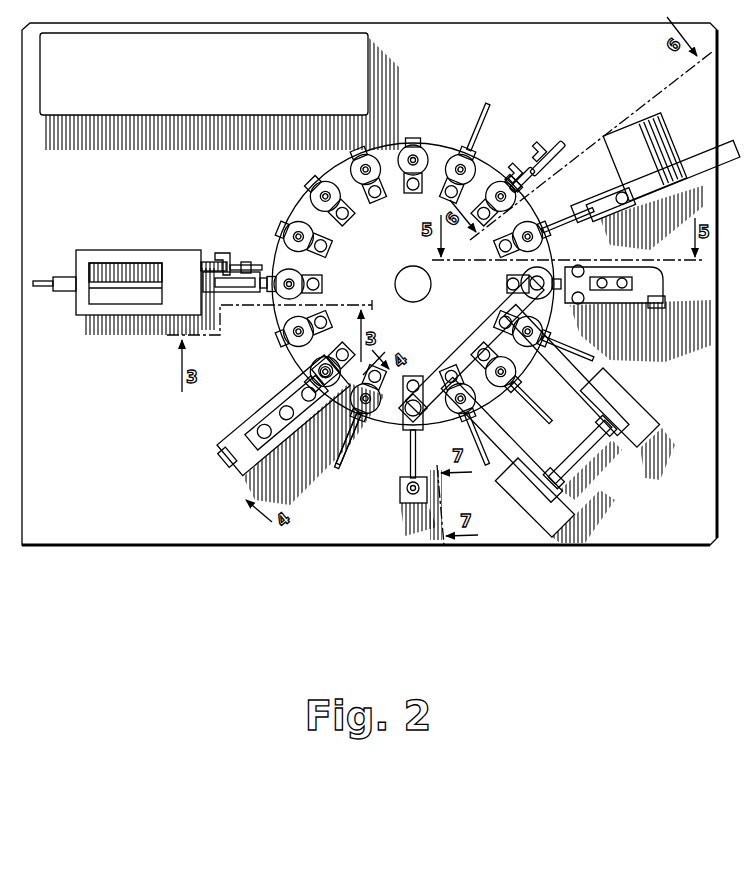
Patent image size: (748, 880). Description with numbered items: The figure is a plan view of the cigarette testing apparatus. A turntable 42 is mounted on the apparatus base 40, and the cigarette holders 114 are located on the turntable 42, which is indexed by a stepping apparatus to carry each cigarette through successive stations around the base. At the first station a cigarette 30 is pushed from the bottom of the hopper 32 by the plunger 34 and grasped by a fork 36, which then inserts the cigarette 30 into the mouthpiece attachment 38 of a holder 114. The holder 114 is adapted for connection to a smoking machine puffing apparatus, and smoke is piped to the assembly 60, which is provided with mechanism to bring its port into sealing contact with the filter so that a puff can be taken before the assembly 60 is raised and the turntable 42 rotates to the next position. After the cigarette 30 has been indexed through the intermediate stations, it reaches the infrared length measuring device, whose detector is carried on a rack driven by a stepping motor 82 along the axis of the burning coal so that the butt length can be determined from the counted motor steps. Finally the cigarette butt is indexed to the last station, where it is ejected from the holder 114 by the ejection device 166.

The apparatus base 40 is at (143, 420).
The turntable 42 is at (430, 150).
The hopper 32 is at (76, 306).
The plunger 34 is at (207, 258).
The mouthpiece attachment 38 is at (268, 280).
The cigarette 30 is at (255, 292).
The fork 36 is at (272, 292).
The holder 114 is at (283, 366).
The assembly 60 is at (475, 340).
The stepping motor 82 is at (668, 136).
The ejection device 166 is at (538, 116).